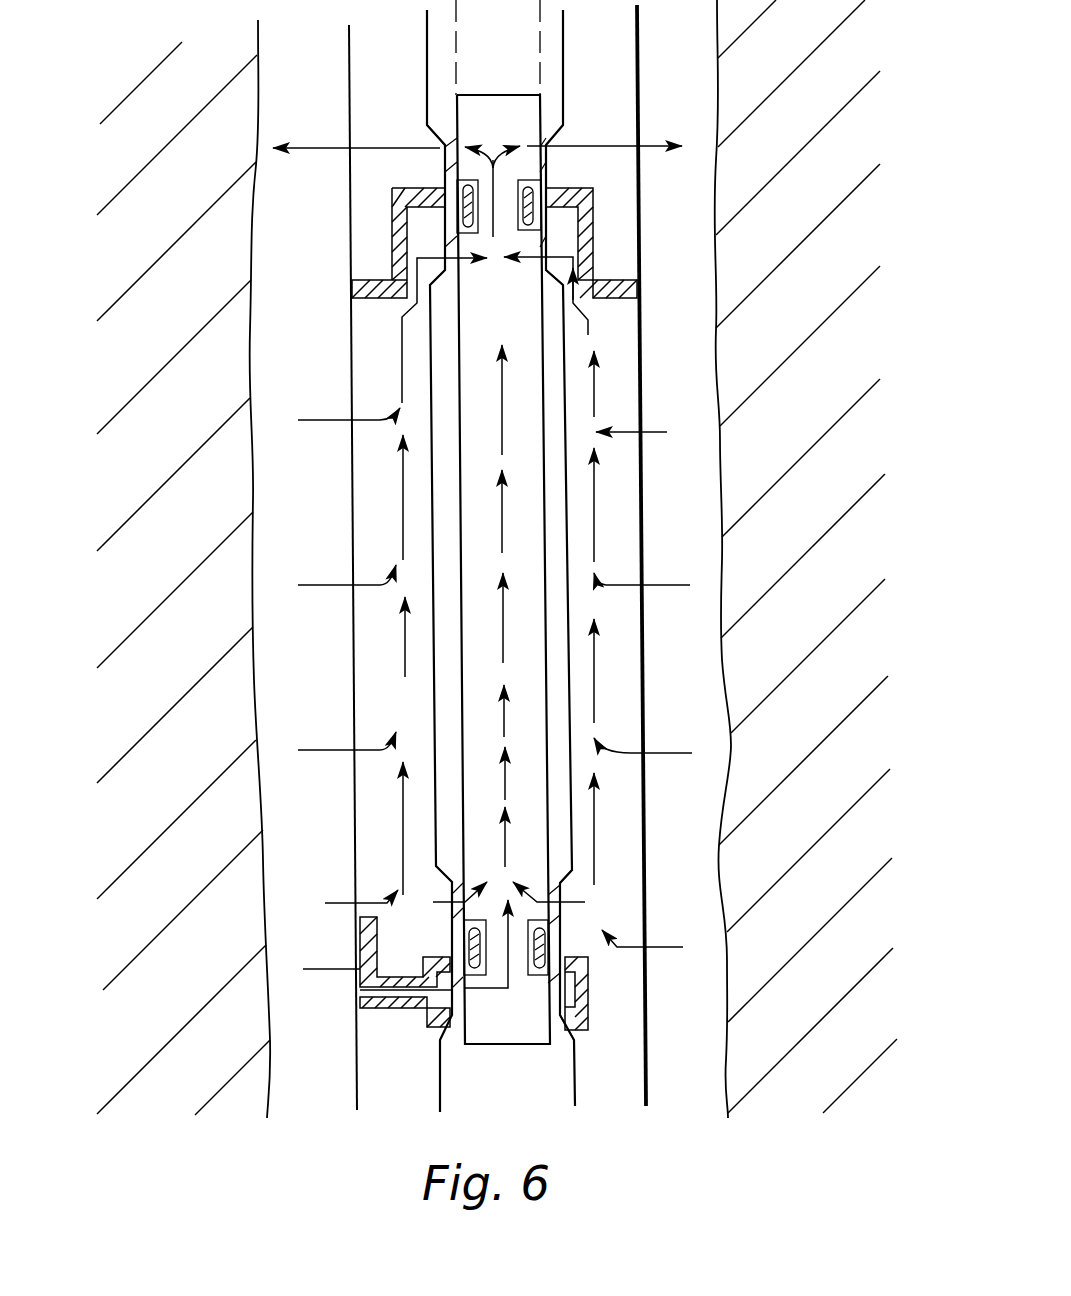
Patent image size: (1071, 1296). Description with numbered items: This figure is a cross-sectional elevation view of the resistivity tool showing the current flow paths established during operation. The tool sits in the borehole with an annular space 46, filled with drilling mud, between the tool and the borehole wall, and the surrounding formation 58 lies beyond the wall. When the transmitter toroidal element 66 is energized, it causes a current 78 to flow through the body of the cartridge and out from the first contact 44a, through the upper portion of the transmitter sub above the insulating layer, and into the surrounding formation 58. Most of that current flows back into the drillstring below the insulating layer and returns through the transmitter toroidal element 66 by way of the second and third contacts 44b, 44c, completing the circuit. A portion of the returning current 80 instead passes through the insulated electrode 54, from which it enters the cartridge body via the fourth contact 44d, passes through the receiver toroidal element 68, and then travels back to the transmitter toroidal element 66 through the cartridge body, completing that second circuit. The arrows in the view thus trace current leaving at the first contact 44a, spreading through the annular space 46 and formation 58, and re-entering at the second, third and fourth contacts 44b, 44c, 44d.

The first contact 44a is at (546, 130).
The second contact 44b is at (545, 247).
The third contact 44c is at (563, 884).
The fourth contact 44d is at (556, 1005).
The annular space 46 is at (702, 389).
The surrounding formation 58 is at (816, 422).
The insulated electrode 54 is at (358, 947).
The transmitter toroidal element 66 is at (527, 198).
The receiver toroidal element 68 is at (540, 943).
The current 78 is at (493, 206).
The returning current 80 is at (485, 995).